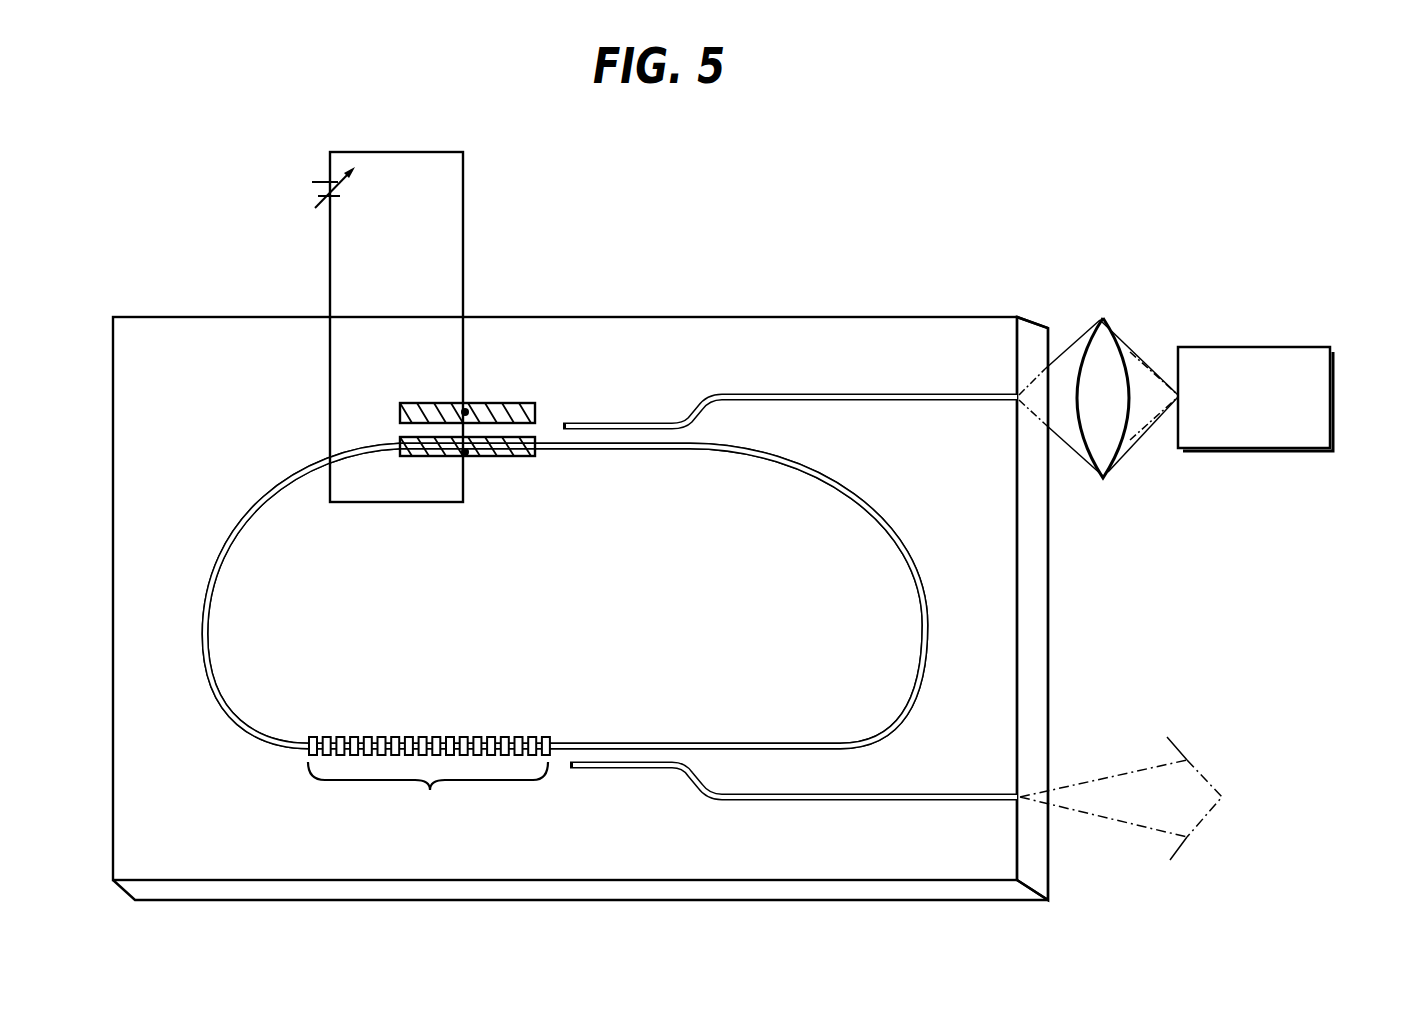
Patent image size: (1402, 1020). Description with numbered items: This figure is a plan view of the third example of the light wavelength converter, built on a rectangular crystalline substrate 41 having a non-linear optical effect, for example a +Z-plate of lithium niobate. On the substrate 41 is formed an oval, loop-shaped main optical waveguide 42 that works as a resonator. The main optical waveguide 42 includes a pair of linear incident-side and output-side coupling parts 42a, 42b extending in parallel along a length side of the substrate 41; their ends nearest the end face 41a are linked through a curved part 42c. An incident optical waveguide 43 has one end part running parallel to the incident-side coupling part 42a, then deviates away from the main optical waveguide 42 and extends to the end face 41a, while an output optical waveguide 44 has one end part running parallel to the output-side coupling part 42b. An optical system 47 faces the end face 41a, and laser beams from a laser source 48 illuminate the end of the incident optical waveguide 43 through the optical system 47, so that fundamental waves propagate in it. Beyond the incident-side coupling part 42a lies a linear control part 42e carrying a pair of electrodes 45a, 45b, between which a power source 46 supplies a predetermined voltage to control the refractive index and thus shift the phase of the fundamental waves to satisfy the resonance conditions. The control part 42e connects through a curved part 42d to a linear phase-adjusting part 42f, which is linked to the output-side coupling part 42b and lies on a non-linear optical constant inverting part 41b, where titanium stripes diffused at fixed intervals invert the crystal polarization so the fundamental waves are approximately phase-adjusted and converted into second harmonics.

The crystalline substrate 41 is at (942, 312).
The end face 41a is at (1030, 333).
The non-linear optical constant inverting part 41b is at (428, 793).
The main optical waveguide 42 is at (565, 600).
The incident-side coupling part 42a is at (661, 450).
The output-side coupling part 42b is at (672, 742).
The curved part 42c is at (895, 558).
The curved part 42d is at (217, 590).
The control part 42e is at (490, 458).
The phase-adjusting part 42f is at (434, 737).
The incident optical waveguide 43 is at (912, 401).
The output optical waveguide 44 is at (903, 795).
The electrode 45a is at (536, 405).
The electrode 45b is at (537, 457).
The power source 46 is at (327, 188).
The optical system 47 is at (1112, 452).
The laser source 48 is at (1228, 358).